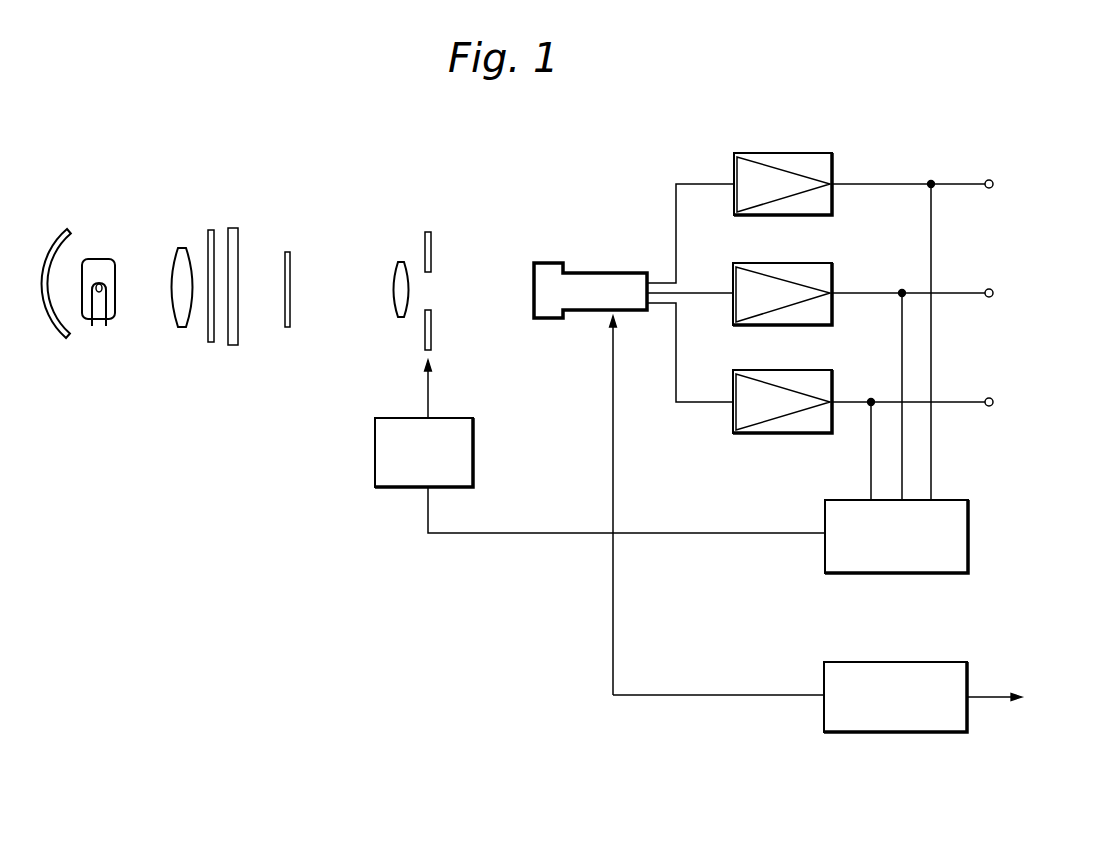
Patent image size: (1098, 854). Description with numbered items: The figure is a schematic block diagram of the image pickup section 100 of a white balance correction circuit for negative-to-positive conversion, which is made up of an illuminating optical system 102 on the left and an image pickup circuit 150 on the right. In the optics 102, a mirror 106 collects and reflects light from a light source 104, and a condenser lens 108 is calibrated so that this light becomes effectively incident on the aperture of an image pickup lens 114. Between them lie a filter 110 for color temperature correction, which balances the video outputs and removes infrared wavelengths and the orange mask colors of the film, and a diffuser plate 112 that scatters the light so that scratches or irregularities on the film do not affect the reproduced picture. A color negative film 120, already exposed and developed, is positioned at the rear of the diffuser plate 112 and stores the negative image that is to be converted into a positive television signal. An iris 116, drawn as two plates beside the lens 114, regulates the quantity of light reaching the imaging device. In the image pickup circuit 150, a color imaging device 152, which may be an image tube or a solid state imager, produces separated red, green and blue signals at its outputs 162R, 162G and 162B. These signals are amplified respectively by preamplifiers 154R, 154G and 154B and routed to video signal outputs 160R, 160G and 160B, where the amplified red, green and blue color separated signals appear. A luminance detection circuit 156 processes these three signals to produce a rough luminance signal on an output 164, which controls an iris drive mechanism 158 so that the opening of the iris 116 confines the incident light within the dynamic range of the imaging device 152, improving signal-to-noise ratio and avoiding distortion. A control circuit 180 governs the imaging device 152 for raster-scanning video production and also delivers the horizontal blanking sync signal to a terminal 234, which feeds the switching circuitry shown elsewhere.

The image pickup section 100 is at (540, 166).
The illuminating optical system 102 is at (247, 186).
The light source 104 is at (115, 312).
The mirror 106 is at (58, 337).
The condenser lens 108 is at (177, 327).
The filter for color temperature correction 110 is at (211, 343).
The diffuser plate 112 is at (237, 347).
The image pickup lens 114 is at (398, 317).
The iris 116 is at (431, 245).
The color negative film 120 is at (287, 327).
The image pickup circuit 150 is at (573, 452).
The color imaging device 152 is at (583, 318).
The preamplifier 154R is at (832, 212).
The preamplifier 154G is at (825, 327).
The preamplifier 154B is at (803, 435).
The luminance detection circuit 156 is at (893, 574).
The iris drive mechanism 158 is at (473, 478).
The video signal output 160R is at (993, 186).
The video signal output 160G is at (993, 295).
The video signal output 160B is at (993, 404).
The output of imaging device 162R is at (676, 222).
The output of imaging device 162G is at (703, 297).
The output of imaging device 162B is at (693, 404).
The output 164 is at (647, 533).
The control circuit 180 is at (887, 733).
The terminal 234 is at (988, 694).